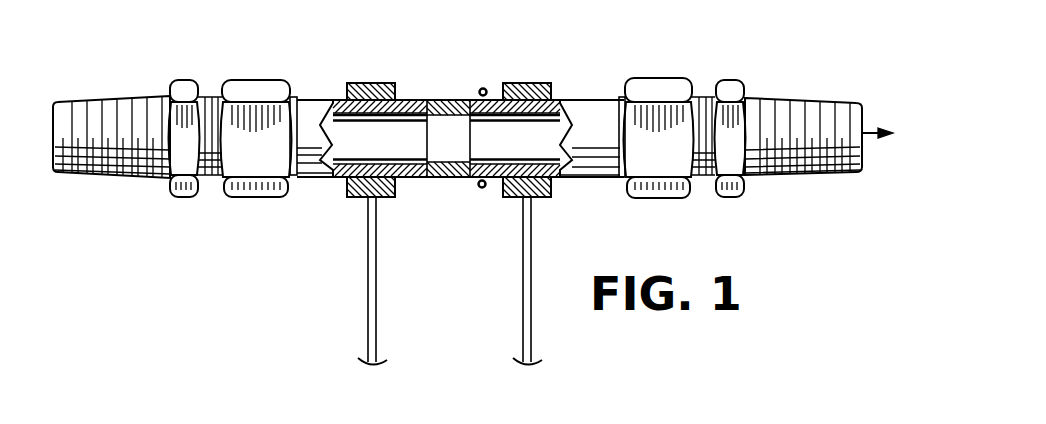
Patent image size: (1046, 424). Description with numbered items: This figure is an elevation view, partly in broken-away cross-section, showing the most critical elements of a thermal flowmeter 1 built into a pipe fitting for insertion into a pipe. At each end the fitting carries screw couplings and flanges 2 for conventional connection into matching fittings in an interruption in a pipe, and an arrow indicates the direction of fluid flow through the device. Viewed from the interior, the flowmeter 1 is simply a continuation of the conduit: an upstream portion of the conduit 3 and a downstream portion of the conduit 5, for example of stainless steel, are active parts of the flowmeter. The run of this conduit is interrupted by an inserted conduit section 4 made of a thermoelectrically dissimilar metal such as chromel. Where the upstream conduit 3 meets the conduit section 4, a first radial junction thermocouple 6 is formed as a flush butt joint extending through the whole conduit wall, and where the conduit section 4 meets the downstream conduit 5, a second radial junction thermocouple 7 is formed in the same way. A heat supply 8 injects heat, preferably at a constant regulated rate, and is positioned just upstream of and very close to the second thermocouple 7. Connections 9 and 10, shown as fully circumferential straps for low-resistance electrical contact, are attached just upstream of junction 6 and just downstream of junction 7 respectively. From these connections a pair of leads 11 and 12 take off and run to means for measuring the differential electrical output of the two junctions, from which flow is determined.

The flowmeter 1 is at (510, 65).
The screw couplings and flanges 2 is at (130, 96).
The upstream portion of the conduit 3 is at (315, 97).
The inserted conduit section 4 is at (440, 98).
The downstream portion of the conduit 5 is at (556, 96).
The first radial junction thermocouple 6 is at (427, 180).
The second radial junction thermocouple 7 is at (470, 180).
The heat supply 8 is at (484, 82).
The connection to the first radial junction thermocouple 9 is at (355, 198).
The connection to the second radial junction thermocouple 10 is at (535, 197).
The lead 11 is at (368, 309).
The lead 12 is at (523, 309).